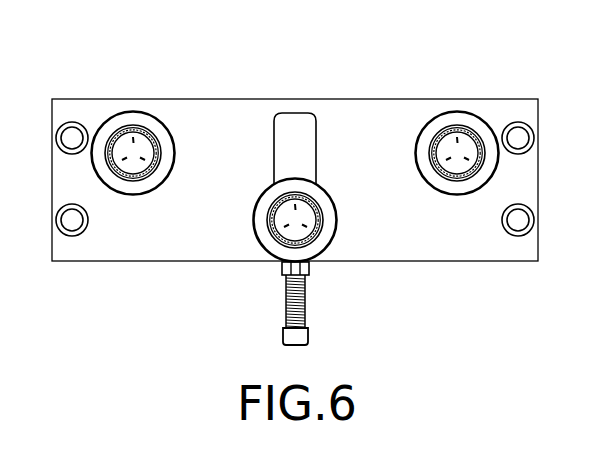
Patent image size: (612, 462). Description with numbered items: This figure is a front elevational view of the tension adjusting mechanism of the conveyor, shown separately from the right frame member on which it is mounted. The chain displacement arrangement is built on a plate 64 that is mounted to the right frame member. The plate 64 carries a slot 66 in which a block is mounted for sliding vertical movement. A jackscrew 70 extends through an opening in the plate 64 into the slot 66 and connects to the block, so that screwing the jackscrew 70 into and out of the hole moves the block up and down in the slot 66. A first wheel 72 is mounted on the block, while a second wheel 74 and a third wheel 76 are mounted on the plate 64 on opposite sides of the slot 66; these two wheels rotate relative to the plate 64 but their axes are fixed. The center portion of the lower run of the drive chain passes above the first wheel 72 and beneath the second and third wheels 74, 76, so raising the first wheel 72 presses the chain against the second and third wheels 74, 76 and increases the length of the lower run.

The plate 64 is at (472, 242).
The slot 66 is at (302, 122).
The jackscrew 70 is at (305, 300).
The first wheel 72 is at (268, 243).
The second wheel 74 is at (139, 120).
The third wheel 76 is at (463, 118).